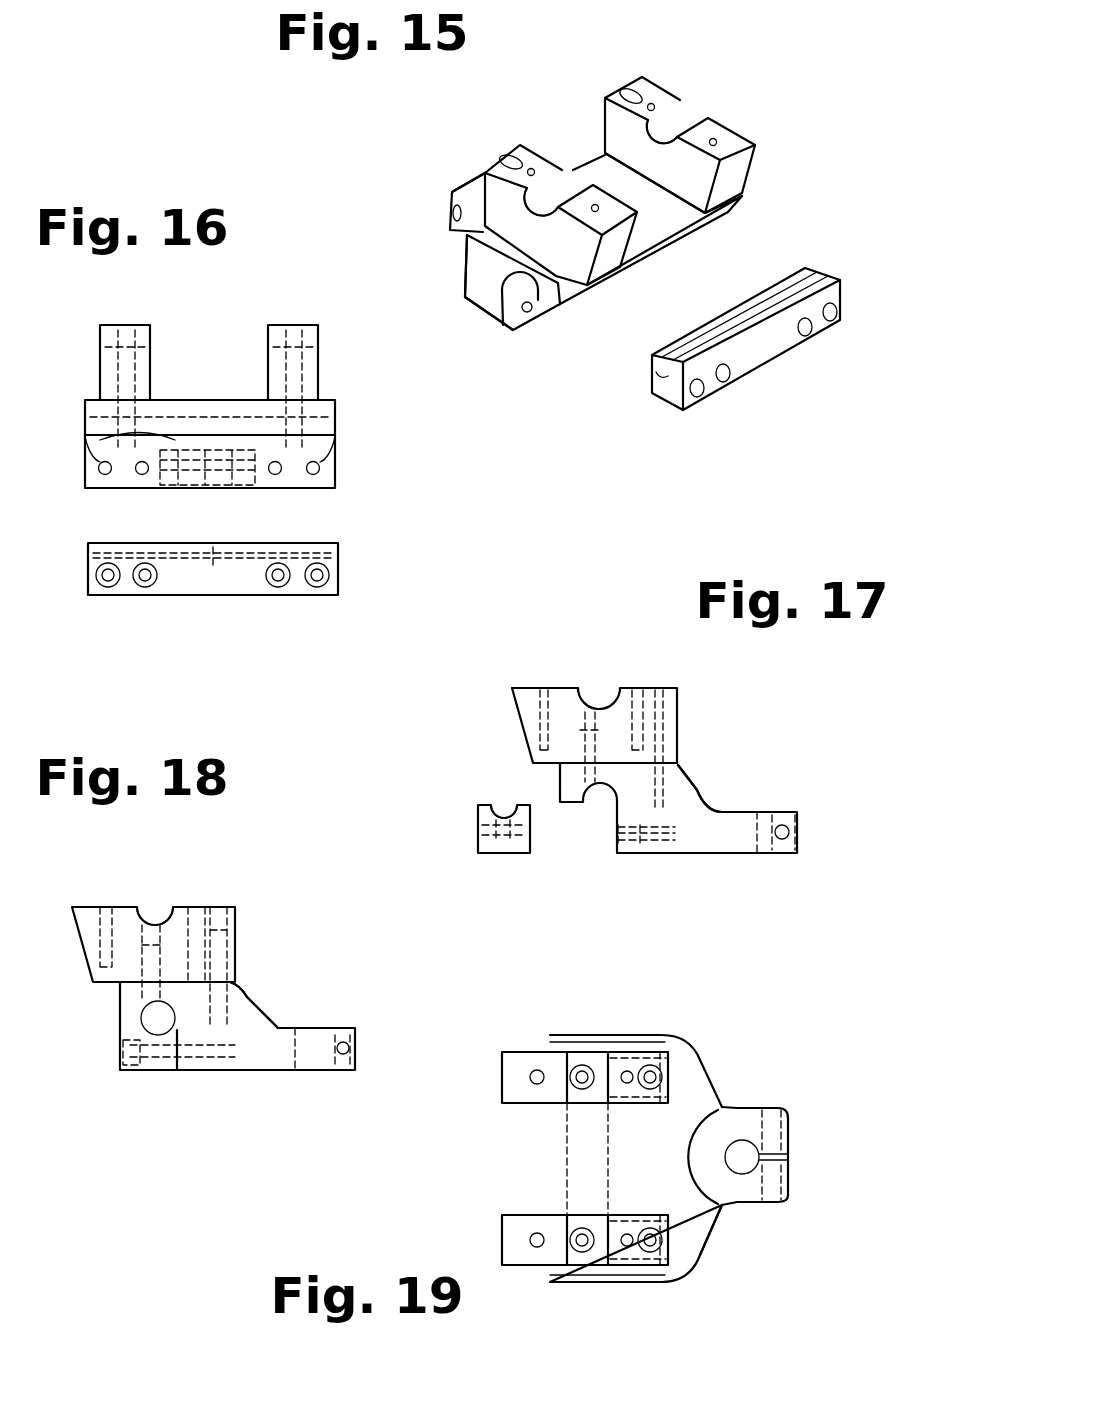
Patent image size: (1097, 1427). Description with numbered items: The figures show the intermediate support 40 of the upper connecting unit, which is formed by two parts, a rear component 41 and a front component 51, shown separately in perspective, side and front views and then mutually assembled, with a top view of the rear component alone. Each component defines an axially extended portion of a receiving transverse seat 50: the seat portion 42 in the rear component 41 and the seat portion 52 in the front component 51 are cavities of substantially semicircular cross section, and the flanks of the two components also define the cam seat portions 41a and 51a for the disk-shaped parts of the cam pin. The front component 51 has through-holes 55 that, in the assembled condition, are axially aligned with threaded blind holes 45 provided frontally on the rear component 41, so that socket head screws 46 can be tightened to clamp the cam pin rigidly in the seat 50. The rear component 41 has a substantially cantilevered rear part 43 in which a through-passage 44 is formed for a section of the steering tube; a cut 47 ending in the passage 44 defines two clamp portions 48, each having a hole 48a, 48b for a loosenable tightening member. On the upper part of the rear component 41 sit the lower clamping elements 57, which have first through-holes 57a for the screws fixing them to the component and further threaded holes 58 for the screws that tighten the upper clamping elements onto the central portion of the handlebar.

In FIG. 15, the intermediate support 40 is at (806, 115).
In FIG. 18, the intermediate support 40 is at (322, 905).
In FIG. 15, the rear component 41 is at (440, 259).
In FIG. 16, the rear component 41 is at (343, 449).
In FIG. 17, the rear component 41 is at (703, 783).
In FIG. 18, the rear component 41 is at (280, 997).
In FIG. 19, the rear component 41 is at (695, 1035).
In FIG. 15, the cam seat portion 41a is at (500, 290).
In FIG. 15, the seat portion 42 is at (533, 312).
In FIG. 16, the seat portion 42 is at (85, 425).
In FIG. 17, the seat portion 42 is at (600, 785).
In FIG. 19, the seat portion 42 is at (582, 1150).
In FIG. 15, the cantilevered rear part 43 is at (462, 190).
In FIG. 17, the cantilevered rear part 43 is at (740, 812).
In FIG. 18, the cantilevered rear part 43 is at (282, 1028).
In FIG. 19, the cantilevered rear part 43 is at (728, 1115).
In FIG. 17, the through-passage 44 is at (755, 855).
In FIG. 18, the through-passage 44 is at (298, 1070).
In FIG. 19, the through-passage 44 is at (735, 1200).
In FIG. 15, the threaded blind holes 45 is at (522, 308).
In FIG. 16, the threaded blind holes 45 is at (142, 478).
In FIG. 17, the threaded blind holes 45 is at (640, 850).
In FIG. 18, the socket head screws 46 is at (122, 1065).
In FIG. 19, the cut 47 is at (790, 1158).
In FIG. 19, the clamp portions 48 is at (752, 1115).
In FIG. 15, the hole of clamp portion 48a is at (452, 215).
In FIG. 19, the hole of clamp portion 48a is at (790, 1120).
In FIG. 17, the hole of clamp portion 48b is at (783, 840).
In FIG. 18, the hole of clamp portion 48b is at (350, 1048).
In FIG. 19, the hole of clamp portion 48b is at (790, 1182).
In FIG. 18, the receiving transverse seat 50 is at (143, 1016).
In FIG. 15, the front component 51 is at (640, 392).
In FIG. 16, the front component 51 is at (353, 570).
In FIG. 17, the front component 51 is at (507, 862).
In FIG. 18, the front component 51 is at (160, 1078).
In FIG. 15, the cam seat portion 51a is at (667, 388).
In FIG. 15, the seat portion 52 is at (742, 300).
In FIG. 16, the seat portion 52 is at (210, 580).
In FIG. 17, the seat portion 52 is at (505, 800).
In FIG. 15, the through-holes 55 is at (722, 384).
In FIG. 16, the through-holes 55 is at (145, 590).
In FIG. 17, the through-holes 55 is at (480, 832).
In FIG. 15, the lower clamping elements 57 is at (610, 262).
In FIG. 16, the lower clamping elements 57 is at (148, 345).
In FIG. 17, the lower clamping elements 57 is at (520, 710).
In FIG. 18, the lower clamping elements 57 is at (90, 910).
In FIG. 19, the lower clamping elements 57 is at (515, 1052).
In FIG. 15, the first through-holes 57a is at (512, 158).
In FIG. 17, the first through-holes 57a is at (598, 705).
In FIG. 18, the first through-holes 57a is at (158, 925).
In FIG. 15, the threaded holes 58 is at (531, 168).
In FIG. 17, the threaded holes 58 is at (545, 690).
In FIG. 18, the threaded holes 58 is at (115, 905).